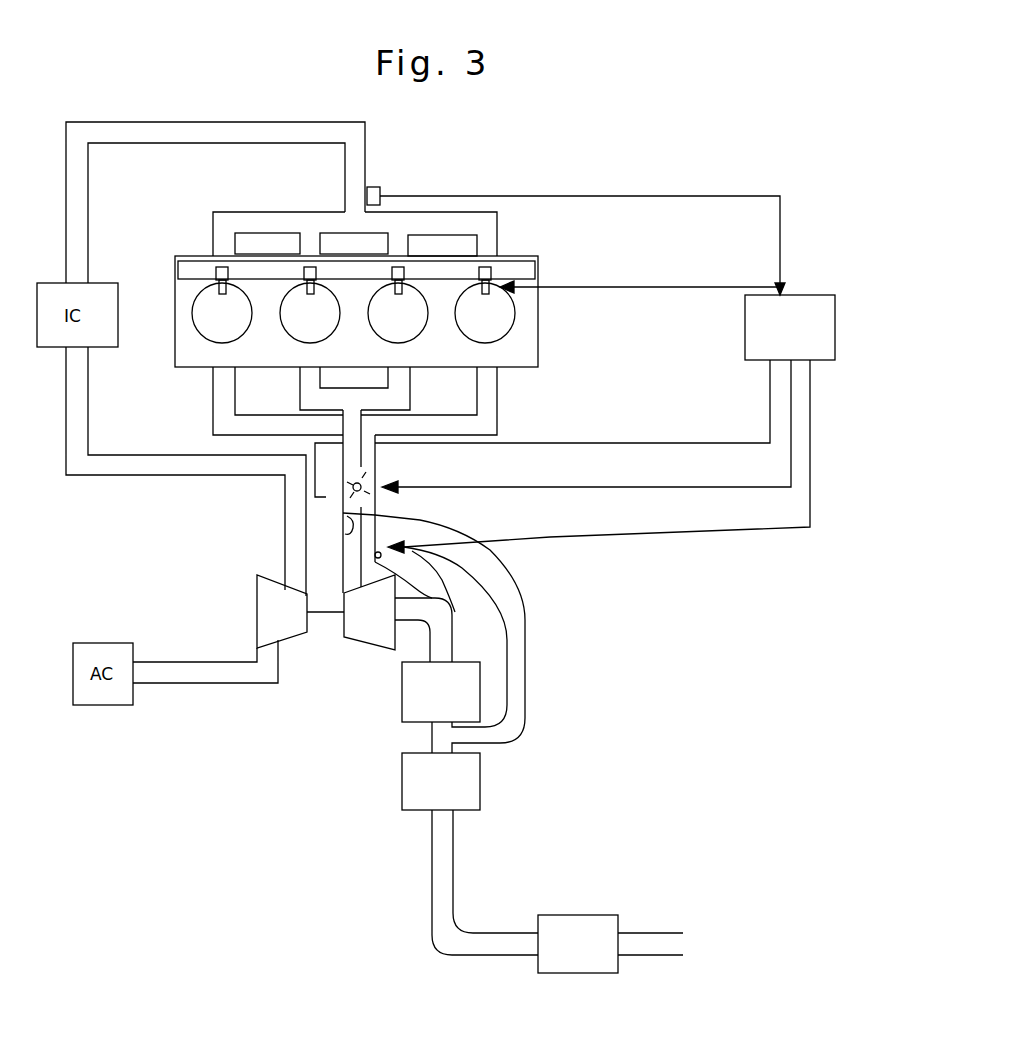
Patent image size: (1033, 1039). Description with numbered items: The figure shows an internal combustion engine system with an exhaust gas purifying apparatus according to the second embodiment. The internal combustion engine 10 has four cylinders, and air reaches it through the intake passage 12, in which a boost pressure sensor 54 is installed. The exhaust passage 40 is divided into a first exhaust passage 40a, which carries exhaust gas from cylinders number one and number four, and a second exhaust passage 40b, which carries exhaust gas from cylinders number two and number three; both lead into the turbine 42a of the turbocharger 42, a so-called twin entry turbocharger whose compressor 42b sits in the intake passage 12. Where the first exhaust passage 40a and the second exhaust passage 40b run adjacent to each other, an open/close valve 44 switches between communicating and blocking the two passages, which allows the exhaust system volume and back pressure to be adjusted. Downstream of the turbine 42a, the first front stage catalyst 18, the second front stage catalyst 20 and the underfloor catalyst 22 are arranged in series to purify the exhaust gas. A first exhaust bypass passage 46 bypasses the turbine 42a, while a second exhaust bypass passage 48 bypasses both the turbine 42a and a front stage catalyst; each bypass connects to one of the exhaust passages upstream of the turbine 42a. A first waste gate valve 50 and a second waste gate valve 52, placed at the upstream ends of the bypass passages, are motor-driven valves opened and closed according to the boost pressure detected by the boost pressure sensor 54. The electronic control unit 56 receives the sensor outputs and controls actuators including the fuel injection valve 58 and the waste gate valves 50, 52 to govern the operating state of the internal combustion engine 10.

The internal combustion engine 10 is at (560, 238).
The intake passage 12 is at (130, 476).
The first front stage catalyst 18 is at (402, 712).
The second front stage catalyst 20 is at (402, 786).
The underfloor catalyst 22 is at (574, 915).
The exhaust passage 40 is at (432, 856).
The first exhaust passage 40a is at (498, 394).
The second exhaust passage 40b is at (392, 395).
The turbocharger 42 is at (292, 650).
The turbine 42a is at (356, 648).
The compressor 42b is at (256, 606).
The open/close valve 44 is at (404, 472).
The first exhaust bypass passage 46 is at (444, 596).
The second exhaust bypass passage 48 is at (510, 576).
The first waste gate valve 50 is at (375, 562).
The second waste gate valve 52 is at (340, 510).
The boost pressure sensor 54 is at (372, 184).
The electronic control unit 56 is at (776, 286).
The fuel injection valve 58 is at (216, 270).